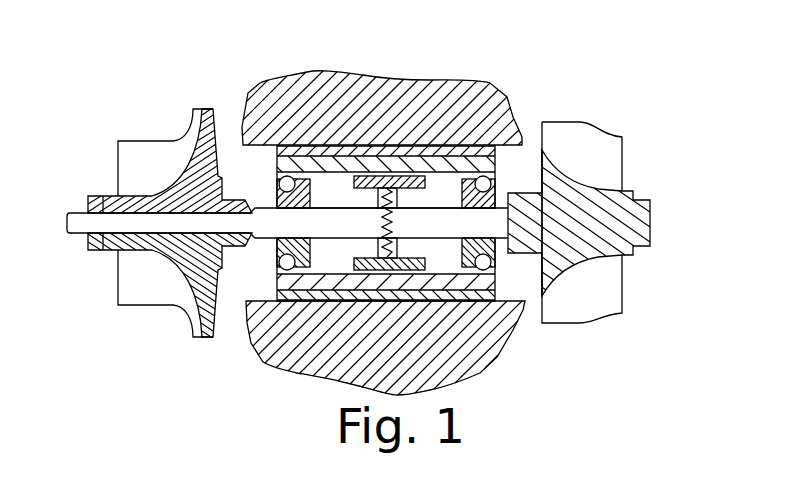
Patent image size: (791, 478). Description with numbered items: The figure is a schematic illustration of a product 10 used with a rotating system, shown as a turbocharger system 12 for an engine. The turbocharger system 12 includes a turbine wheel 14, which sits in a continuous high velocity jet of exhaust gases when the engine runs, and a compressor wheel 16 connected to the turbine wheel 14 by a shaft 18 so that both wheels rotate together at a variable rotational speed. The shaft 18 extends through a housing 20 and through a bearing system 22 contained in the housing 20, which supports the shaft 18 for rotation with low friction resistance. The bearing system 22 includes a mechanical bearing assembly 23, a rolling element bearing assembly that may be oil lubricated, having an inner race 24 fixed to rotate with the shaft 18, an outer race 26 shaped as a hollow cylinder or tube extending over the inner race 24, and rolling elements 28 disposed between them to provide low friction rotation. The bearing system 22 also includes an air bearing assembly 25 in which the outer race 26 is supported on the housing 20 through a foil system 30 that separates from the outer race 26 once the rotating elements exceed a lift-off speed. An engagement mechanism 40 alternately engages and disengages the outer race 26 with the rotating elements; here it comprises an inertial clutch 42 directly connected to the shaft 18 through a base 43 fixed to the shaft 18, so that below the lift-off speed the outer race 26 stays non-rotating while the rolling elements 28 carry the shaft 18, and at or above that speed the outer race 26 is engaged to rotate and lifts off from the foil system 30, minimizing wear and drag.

The product 10 is at (543, 95).
The turbocharger system 12 is at (568, 120).
The turbine wheel 14 is at (572, 324).
The compressor wheel 16 is at (137, 307).
The shaft 18 is at (73, 212).
The housing 20 is at (263, 85).
The bearing system 22 is at (266, 182).
The mechanical bearing assembly 23 is at (507, 166).
The inner race 24 is at (275, 243).
The air bearing assembly 25 is at (340, 147).
The outer race 26 is at (305, 160).
The rolling elements 28 is at (287, 176).
The foil system 30 is at (264, 292).
The engagement mechanism 40 is at (430, 176).
The inertial clutch 42 is at (428, 272).
The base 43 is at (378, 203).